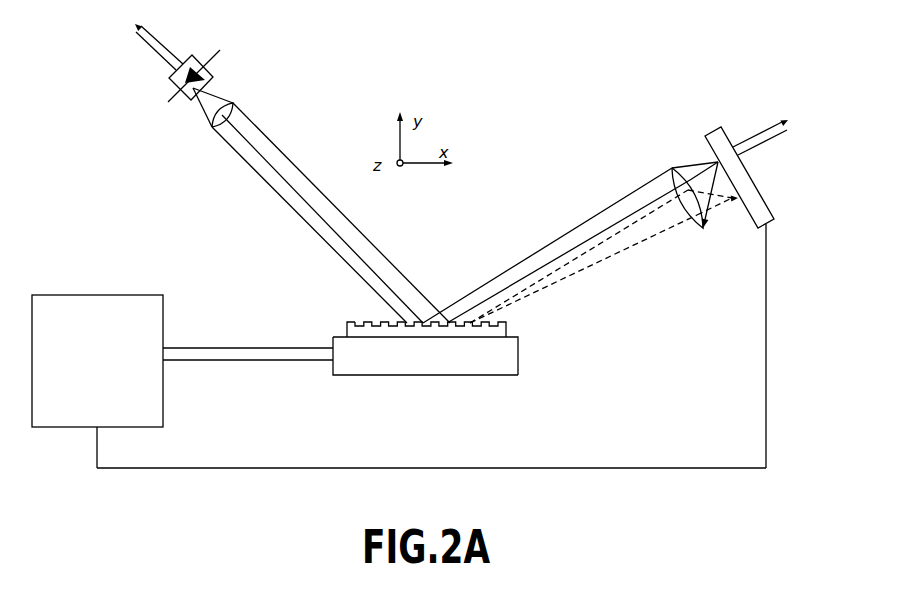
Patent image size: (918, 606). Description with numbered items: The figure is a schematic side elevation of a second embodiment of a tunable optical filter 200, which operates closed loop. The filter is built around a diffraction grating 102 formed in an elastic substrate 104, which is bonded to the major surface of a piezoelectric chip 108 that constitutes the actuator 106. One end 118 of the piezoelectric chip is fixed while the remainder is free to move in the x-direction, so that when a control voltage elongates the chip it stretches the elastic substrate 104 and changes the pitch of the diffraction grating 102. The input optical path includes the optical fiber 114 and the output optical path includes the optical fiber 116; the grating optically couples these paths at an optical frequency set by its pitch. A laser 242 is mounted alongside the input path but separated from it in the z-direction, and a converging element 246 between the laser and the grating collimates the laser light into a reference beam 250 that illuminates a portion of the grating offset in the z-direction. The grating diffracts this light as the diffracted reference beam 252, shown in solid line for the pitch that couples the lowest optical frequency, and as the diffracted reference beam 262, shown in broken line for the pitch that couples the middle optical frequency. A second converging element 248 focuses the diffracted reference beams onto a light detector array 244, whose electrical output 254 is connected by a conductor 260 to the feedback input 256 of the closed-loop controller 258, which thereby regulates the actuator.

The diffraction grating 102 is at (372, 322).
The elastic substrate 104 is at (347, 327).
The actuator 106 is at (563, 334).
The piezoelectric chip 108 is at (507, 343).
The optical fiber 114 is at (170, 52).
The optical fiber 116 is at (744, 141).
The end 118 is at (333, 370).
The tunable optical filter 200 is at (459, 441).
The laser 242 is at (169, 79).
The light detector array 244 is at (748, 170).
The converging element 246 is at (237, 107).
The converging element 248 is at (674, 171).
The reference beam 250 is at (335, 211).
The diffracted reference beam 252 is at (638, 202).
The electrical output 254 is at (770, 224).
The feedback input 256 is at (98, 432).
The closed-loop controller 258 is at (116, 376).
The conductor 260 is at (573, 468).
The diffracted reference beam 262 is at (645, 234).